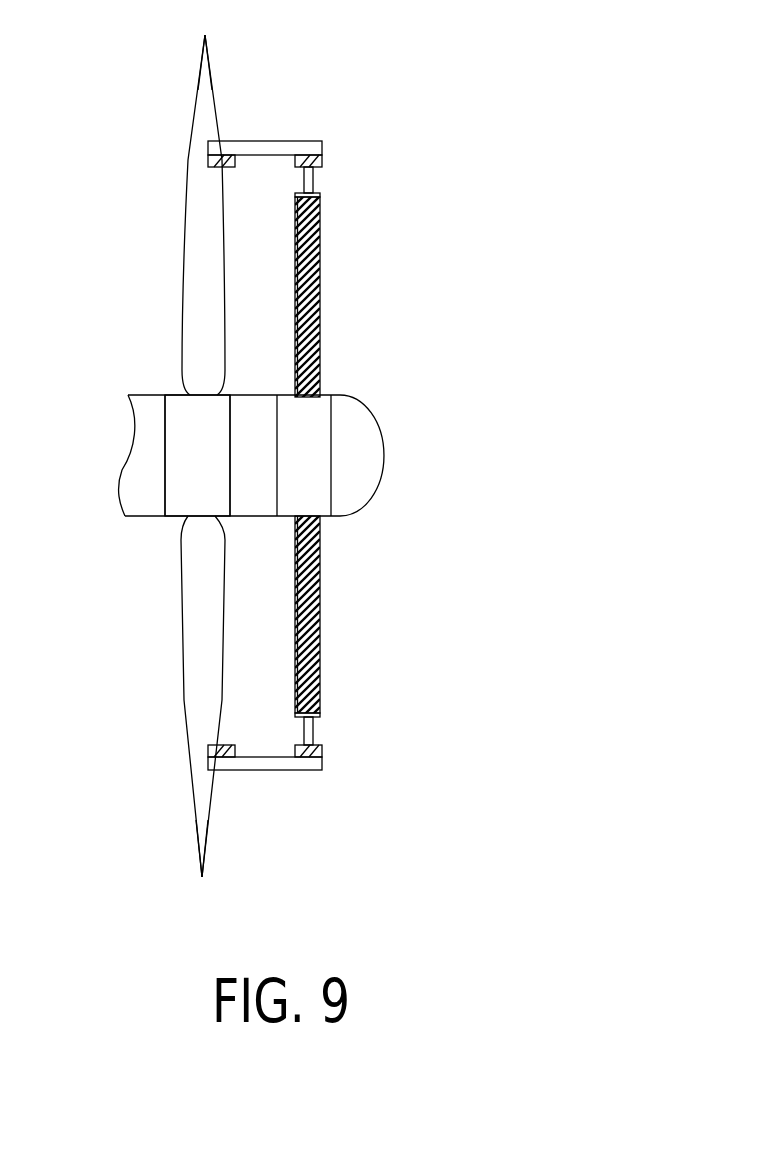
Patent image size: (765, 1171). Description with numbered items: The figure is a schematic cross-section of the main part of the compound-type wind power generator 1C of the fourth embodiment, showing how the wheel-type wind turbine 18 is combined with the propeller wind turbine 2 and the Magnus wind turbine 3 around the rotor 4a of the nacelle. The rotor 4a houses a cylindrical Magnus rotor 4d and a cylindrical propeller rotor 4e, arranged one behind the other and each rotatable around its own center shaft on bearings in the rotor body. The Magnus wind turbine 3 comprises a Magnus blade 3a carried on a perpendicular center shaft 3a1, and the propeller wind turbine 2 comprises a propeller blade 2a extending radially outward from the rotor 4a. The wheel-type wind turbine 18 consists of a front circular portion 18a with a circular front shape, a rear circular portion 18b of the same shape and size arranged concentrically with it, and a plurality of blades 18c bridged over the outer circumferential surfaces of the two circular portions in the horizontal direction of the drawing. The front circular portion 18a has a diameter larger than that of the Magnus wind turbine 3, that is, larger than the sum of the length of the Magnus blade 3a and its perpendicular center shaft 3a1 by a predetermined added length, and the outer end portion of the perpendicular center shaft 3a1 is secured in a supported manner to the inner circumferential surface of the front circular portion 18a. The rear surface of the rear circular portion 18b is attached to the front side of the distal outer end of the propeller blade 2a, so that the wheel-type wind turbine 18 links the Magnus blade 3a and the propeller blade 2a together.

The compound-type wind power generator 1C is at (80, 26).
The propeller wind turbine 2 is at (170, 207).
The propeller blade 2a is at (188, 123).
The Magnus wind turbine 3 is at (369, 470).
The Magnus blade 3a is at (320, 238).
The perpendicular center shaft 3a1 is at (313, 182).
The rotor 4a is at (290, 413).
The Magnus rotor 4d is at (317, 440).
The propeller rotor 4e is at (182, 410).
The wheel-type wind turbine 18 is at (265, 458).
The front circular portion 18a is at (322, 160).
The rear circular portion 18b is at (208, 160).
The blades 18c is at (275, 141).